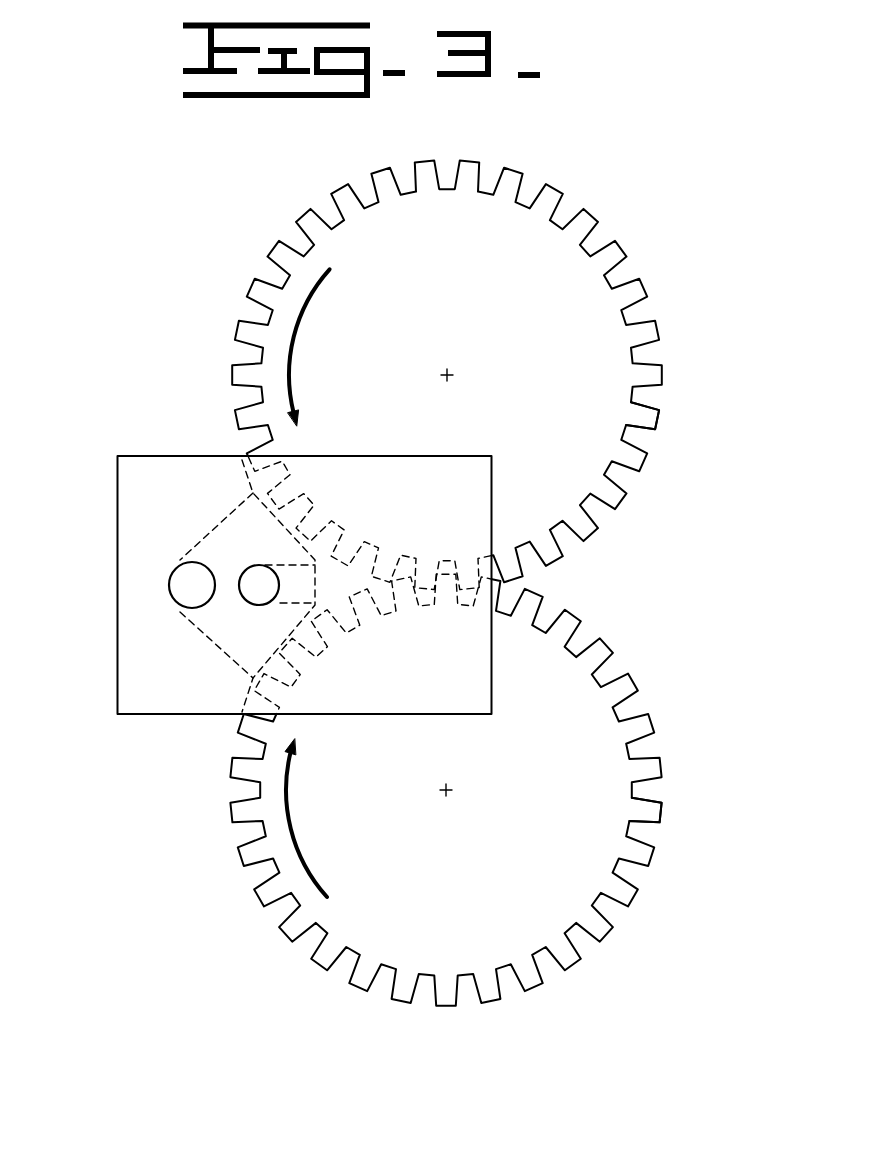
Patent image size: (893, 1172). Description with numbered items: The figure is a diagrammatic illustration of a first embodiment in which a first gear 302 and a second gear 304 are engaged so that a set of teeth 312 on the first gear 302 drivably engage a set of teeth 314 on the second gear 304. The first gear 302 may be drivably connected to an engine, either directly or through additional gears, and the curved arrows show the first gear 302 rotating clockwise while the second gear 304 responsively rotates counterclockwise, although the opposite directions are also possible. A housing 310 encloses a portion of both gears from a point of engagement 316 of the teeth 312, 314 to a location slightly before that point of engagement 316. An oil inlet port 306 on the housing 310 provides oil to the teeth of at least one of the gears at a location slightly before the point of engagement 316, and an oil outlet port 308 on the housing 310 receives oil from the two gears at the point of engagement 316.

The first gear 302 is at (630, 853).
The second gear 304 is at (640, 375).
The oil inlet port 306 is at (169, 587).
The oil outlet port 308 is at (239, 588).
The housing 310 is at (174, 455).
The set of teeth 312 is at (660, 808).
The set of teeth 314 is at (657, 412).
The point of engagement 316 is at (350, 582).